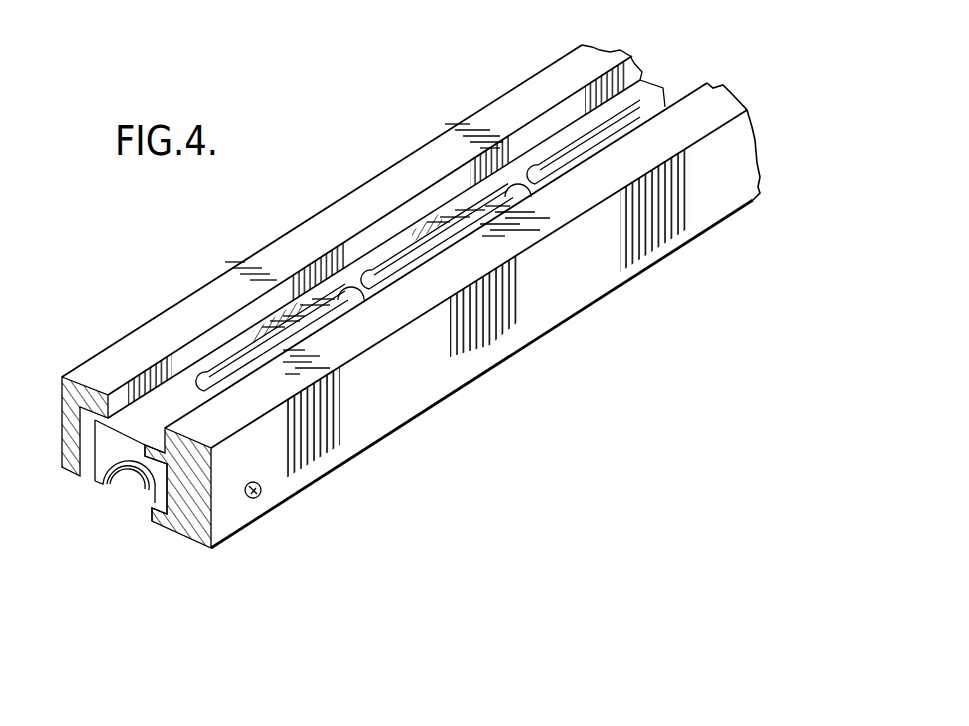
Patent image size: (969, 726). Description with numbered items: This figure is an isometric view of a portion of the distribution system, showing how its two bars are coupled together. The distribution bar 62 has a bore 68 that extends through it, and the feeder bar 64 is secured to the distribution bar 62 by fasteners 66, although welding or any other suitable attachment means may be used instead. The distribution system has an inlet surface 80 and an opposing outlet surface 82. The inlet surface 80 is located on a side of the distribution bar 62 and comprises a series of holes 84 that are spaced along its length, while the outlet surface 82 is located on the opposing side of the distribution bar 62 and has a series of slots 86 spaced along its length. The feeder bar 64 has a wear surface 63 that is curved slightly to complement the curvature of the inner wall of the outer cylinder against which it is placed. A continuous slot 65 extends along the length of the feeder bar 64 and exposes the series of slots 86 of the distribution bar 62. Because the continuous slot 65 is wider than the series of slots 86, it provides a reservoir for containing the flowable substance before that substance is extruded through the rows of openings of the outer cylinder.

The distribution bar 62 is at (170, 516).
The wear surface 63 is at (133, 342).
The feeder bar 64 is at (550, 310).
The continuous slot 65 is at (230, 330).
The fasteners 66 is at (259, 497).
The bore 68 is at (112, 483).
The inlet surface 80 is at (687, 243).
The outlet surface 82 is at (708, 104).
The holes 84 is at (140, 488).
The slots 86 is at (460, 221).